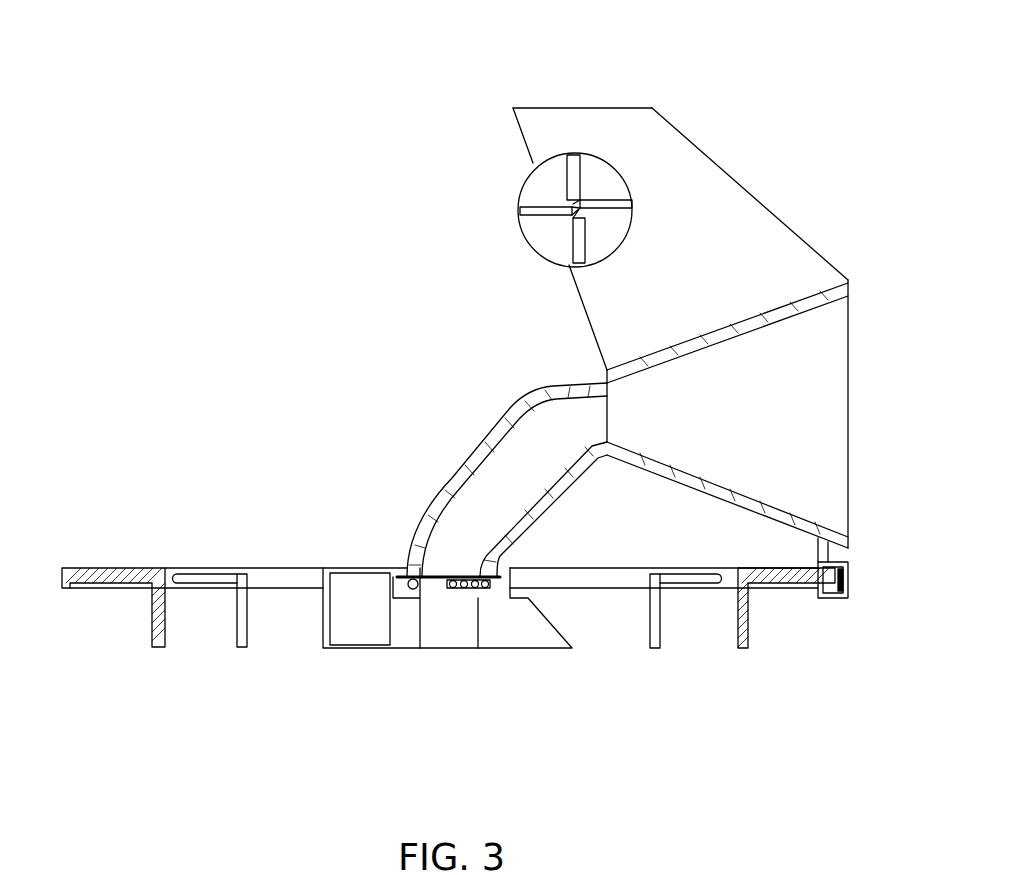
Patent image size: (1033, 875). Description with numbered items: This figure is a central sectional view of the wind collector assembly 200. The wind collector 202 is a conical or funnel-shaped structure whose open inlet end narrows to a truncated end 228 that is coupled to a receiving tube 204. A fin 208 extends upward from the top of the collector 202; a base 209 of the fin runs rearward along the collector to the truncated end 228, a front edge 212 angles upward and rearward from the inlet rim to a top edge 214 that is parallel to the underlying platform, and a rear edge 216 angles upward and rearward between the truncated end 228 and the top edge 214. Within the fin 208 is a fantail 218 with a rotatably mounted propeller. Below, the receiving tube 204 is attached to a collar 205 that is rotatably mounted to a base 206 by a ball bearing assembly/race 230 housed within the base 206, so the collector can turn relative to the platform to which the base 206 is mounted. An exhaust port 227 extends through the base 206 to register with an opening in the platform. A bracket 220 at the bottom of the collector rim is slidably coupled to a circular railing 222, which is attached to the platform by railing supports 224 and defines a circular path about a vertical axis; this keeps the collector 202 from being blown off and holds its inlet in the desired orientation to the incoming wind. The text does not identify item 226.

The wind collector assembly 200 is at (347, 308).
The wind collector 202 is at (837, 333).
The receiving tube 204 is at (495, 488).
The collar 205 is at (502, 567).
The base 206 is at (520, 648).
The fin 208 is at (755, 242).
The base of fin 209 is at (692, 338).
The front edge of fin 212 is at (697, 147).
The top edge of fin 214 is at (545, 107).
The rear edge of fin 216 is at (588, 326).
The fantail 218 is at (540, 227).
The bracket 220 is at (827, 598).
The circular railing 222 is at (275, 580).
The railing supports 224 is at (157, 647).
The chamber 226 is at (443, 618).
The exhaust port 227 is at (478, 615).
The truncated end 228 is at (607, 405).
The ball bearing assembly/race 230 is at (846, 598).